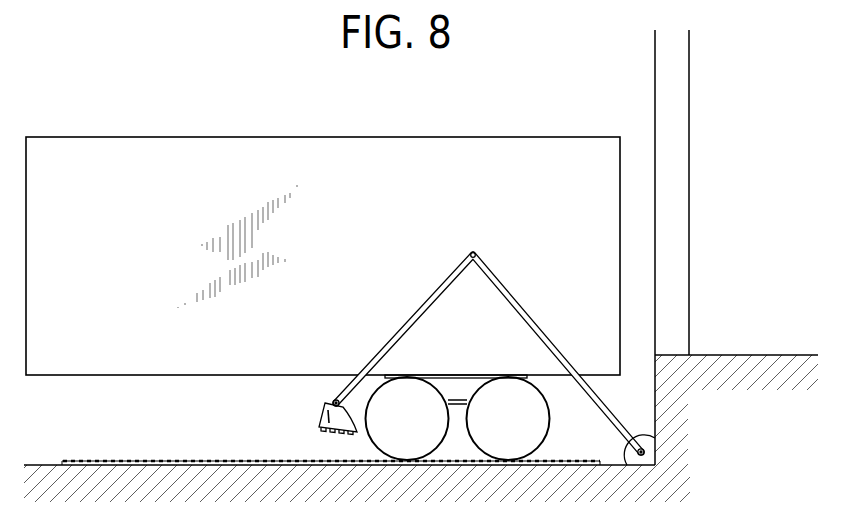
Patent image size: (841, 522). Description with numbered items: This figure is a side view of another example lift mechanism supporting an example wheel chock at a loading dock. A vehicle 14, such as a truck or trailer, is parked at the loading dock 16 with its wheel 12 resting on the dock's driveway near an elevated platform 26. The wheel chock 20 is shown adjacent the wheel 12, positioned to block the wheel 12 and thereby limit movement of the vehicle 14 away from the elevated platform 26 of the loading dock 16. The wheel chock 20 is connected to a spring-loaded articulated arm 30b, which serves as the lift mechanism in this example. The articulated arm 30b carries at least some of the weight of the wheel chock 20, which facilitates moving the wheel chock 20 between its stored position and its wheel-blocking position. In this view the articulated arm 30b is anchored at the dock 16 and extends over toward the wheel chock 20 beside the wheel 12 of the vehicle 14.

The vehicle 14 is at (190, 136).
The wheel 12 is at (470, 391).
The spring-loaded articulated arm 30b is at (400, 327).
The wheel chock 20 is at (320, 419).
The loading dock 16 is at (588, 443).
The elevated platform 26 is at (743, 355).